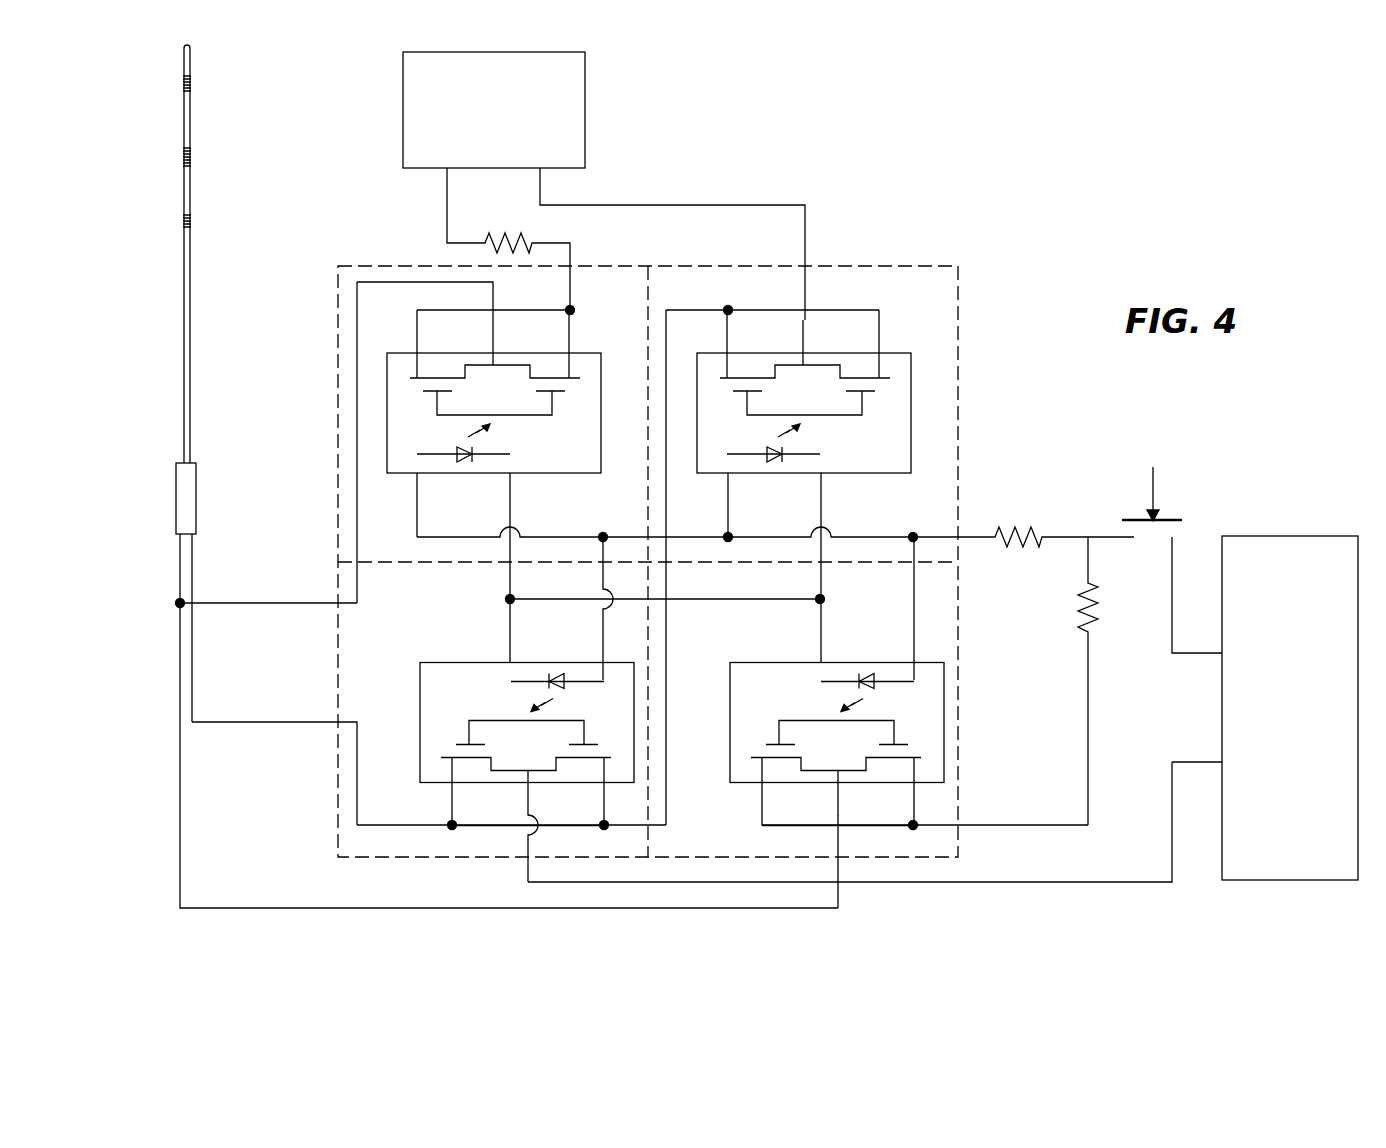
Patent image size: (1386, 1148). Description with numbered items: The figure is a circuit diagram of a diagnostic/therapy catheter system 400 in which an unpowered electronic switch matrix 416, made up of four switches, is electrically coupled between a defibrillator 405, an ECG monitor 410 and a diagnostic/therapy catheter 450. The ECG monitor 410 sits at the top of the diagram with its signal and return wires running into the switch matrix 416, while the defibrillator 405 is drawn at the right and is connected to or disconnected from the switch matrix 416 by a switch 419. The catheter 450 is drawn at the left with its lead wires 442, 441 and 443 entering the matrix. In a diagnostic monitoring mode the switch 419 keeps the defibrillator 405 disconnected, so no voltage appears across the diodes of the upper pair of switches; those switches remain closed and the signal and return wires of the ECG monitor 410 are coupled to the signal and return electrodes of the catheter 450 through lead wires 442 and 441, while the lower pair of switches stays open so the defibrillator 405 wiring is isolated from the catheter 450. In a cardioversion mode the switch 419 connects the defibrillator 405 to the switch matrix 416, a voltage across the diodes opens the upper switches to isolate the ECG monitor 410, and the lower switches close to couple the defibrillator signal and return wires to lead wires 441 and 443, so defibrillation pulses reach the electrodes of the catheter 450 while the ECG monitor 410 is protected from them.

The diagnostic/therapy catheter system 400 is at (965, 150).
The defibrillator 405 is at (1290, 536).
The ECG monitor 410 is at (585, 110).
The switch matrix 416 is at (962, 272).
The switch 419 is at (1153, 491).
The lead wire 441 is at (262, 718).
The lead wire 442 is at (260, 600).
The lead wire 443 is at (440, 908).
The diagnostic/therapy catheter 450 is at (196, 498).